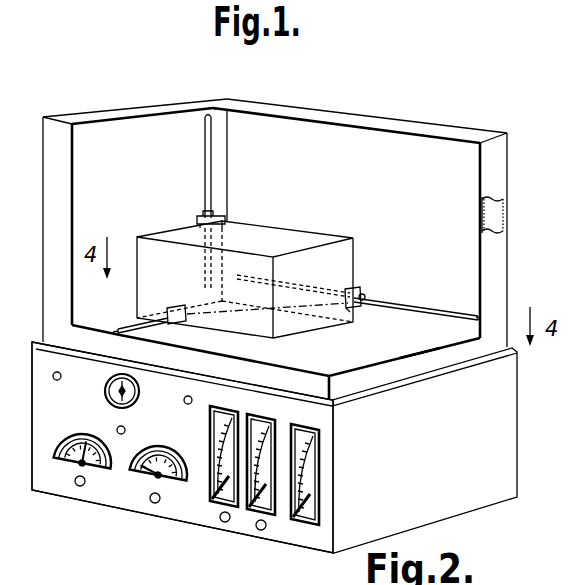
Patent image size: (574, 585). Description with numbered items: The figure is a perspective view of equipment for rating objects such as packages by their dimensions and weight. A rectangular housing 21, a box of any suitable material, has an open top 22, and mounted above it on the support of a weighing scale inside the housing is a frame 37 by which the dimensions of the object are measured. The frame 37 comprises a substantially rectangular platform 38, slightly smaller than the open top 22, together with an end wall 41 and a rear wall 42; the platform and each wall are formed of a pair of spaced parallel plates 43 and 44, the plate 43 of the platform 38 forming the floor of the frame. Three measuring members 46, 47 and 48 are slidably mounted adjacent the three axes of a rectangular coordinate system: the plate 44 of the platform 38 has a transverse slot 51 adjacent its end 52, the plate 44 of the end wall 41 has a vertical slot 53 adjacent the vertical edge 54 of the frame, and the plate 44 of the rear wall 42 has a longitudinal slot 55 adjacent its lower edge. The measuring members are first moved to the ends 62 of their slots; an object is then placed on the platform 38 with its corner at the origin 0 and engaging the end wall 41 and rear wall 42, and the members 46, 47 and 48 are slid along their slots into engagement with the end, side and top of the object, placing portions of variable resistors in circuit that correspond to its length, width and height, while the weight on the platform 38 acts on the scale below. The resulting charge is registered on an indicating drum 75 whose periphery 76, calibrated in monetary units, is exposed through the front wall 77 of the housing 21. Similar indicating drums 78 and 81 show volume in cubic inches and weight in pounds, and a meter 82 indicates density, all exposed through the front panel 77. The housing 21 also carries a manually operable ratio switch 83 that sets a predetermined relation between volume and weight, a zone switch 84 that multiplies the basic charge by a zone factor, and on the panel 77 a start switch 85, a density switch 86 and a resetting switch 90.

The origin 0 is at (230, 300).
The rectangular housing 21 is at (492, 412).
The open top 22 is at (413, 378).
The frame 37 is at (370, 384).
The platform 38 is at (427, 372).
The end wall 41 is at (90, 143).
The rear wall 42 is at (427, 143).
The plate 43 is at (507, 211).
The plate 44 is at (482, 209).
The measuring member 46 is at (359, 288).
The measuring member 47 is at (184, 300).
The measuring member 48 is at (228, 224).
The transverse slot 51 is at (143, 327).
The end 52 is at (93, 323).
The vertical slot 53 is at (205, 146).
The vertical edge 54 is at (228, 146).
The longitudinal slot 55 is at (397, 298).
The ends of slots 62 is at (213, 107).
The drum 75 is at (298, 522).
The periphery 76 is at (310, 471).
The front wall 77 is at (319, 541).
The indicating drum 78 is at (213, 500).
The indicating drum 81 is at (253, 512).
The meter 82 is at (105, 388).
The ratio switch 83 is at (58, 472).
The zone switch 84 is at (133, 490).
The start switch 85 is at (55, 380).
The density switch 86 is at (125, 427).
The resetting switch 90 is at (191, 396).